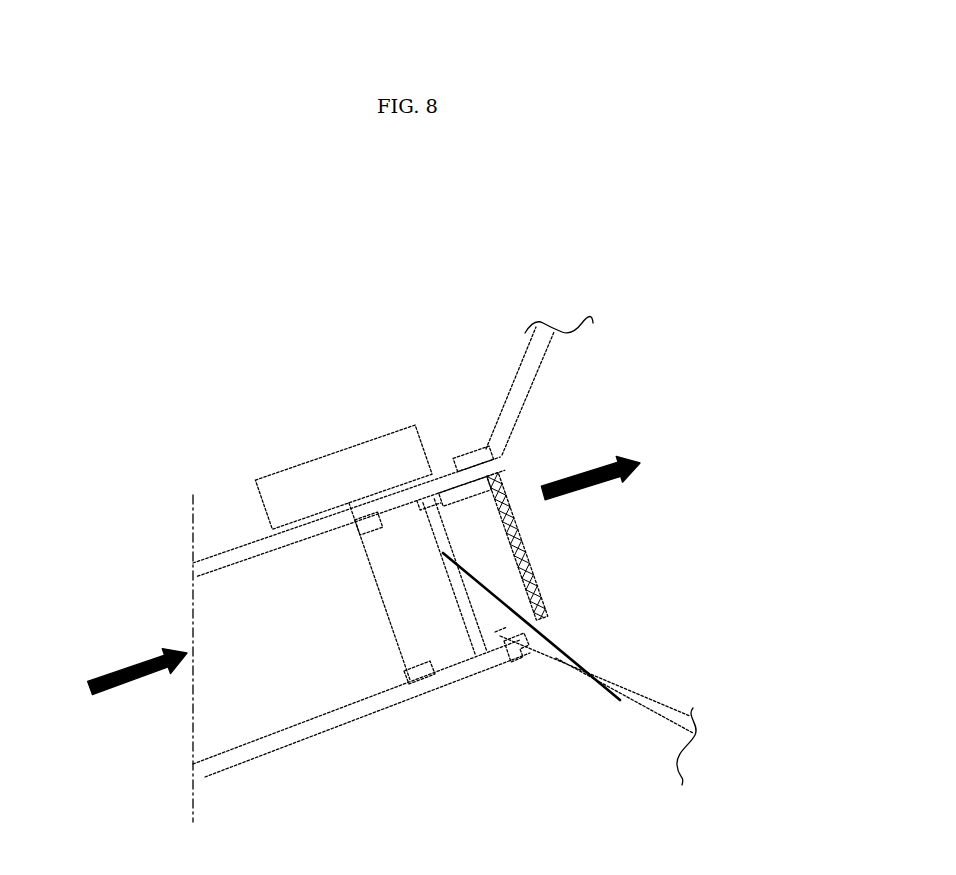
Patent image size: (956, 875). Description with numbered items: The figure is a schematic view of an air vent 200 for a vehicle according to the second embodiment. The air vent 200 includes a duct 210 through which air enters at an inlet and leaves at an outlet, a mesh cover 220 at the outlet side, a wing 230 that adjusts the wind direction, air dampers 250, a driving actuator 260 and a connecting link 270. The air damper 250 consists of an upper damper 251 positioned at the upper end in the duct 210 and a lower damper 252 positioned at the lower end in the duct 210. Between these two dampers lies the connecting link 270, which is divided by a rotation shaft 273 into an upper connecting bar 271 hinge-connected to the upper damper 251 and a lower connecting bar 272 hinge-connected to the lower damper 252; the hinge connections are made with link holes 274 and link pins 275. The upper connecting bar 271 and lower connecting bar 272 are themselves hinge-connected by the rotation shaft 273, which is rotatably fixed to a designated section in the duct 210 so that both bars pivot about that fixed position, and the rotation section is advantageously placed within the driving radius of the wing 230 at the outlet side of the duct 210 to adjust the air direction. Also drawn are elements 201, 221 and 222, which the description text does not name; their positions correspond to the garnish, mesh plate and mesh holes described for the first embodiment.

The air vent 200 is at (403, 229).
The pipe 201 is at (537, 353).
The duct 210 is at (349, 516).
The mesh cover 220 is at (713, 500).
The first flap 221 is at (520, 537).
The second flap 222 is at (540, 627).
The wing 230 is at (379, 591).
The air damper 250 is at (500, 537).
The upper damper 251 is at (465, 491).
The lower damper 252 is at (508, 643).
The driving actuator 260 is at (343, 477).
The connecting link 270 is at (445, 610).
The upper connecting bar 271 is at (572, 660).
The lower connecting bar 272 is at (467, 617).
The rotation shaft 273 is at (455, 577).
The link hole 274 is at (380, 528).
The link pin 275 is at (426, 505).